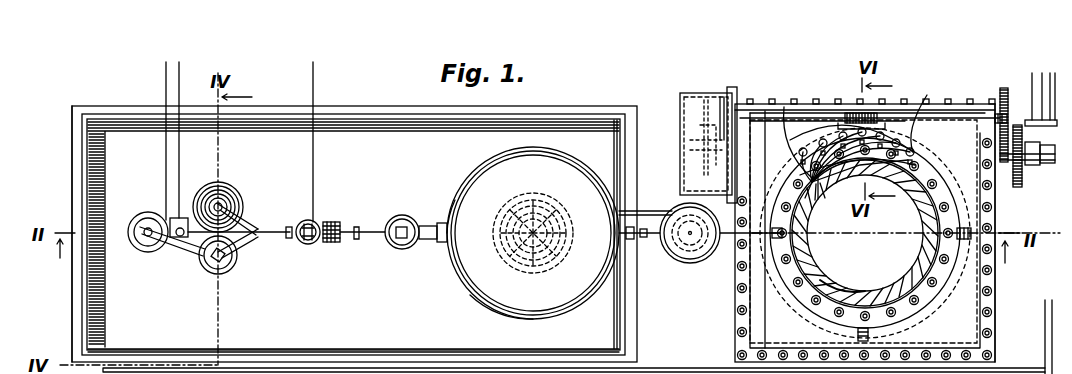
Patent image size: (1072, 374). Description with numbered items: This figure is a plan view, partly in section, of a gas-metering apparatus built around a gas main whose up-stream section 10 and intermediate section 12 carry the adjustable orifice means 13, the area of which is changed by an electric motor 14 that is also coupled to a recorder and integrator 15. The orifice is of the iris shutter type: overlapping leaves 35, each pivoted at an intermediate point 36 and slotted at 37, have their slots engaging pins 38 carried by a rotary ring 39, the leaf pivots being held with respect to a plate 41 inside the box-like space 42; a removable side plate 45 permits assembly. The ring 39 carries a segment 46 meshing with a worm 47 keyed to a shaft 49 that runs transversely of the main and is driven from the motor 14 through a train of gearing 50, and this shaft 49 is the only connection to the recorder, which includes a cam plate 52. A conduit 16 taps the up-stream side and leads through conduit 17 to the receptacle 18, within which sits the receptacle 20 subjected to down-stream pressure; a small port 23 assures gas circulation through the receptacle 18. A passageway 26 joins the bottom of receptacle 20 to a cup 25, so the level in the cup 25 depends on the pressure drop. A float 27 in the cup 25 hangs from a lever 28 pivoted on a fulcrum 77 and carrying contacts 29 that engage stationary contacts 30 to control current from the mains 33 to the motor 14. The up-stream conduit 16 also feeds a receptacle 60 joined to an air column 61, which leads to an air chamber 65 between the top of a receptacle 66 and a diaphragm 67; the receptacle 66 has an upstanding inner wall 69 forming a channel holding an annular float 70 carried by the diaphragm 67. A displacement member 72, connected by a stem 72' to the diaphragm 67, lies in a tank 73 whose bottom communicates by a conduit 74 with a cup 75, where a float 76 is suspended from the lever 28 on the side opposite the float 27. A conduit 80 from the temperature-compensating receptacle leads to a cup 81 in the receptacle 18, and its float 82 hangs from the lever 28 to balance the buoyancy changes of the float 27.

The gas main section 10 is at (800, 296).
The intermediate section 12 is at (965, 281).
The adjustable orifice means 13 is at (920, 216).
The electric motor 14 is at (1034, 165).
The recorder and integrator 15 is at (705, 93).
The conduit 16 is at (795, 242).
The conduit 17 is at (660, 245).
The receptacle 18 is at (548, 116).
The receptacle 20 is at (148, 220).
The small port 23 is at (112, 232).
The cup 25 is at (214, 270).
The passageway 26 is at (190, 250).
The float 27 is at (244, 268).
The lever 28 is at (377, 228).
The contacts 29 is at (212, 268).
The stationary contacts 30 is at (181, 218).
The mains 33 is at (1046, 334).
The overlapping leaves 35 is at (843, 285).
The pivot 36 is at (814, 196).
The slot 37 is at (800, 158).
The pins 38 is at (918, 143).
The ring 39 is at (797, 130).
The plate 41 is at (800, 118).
The box-like space 42 is at (926, 164).
The removable side plate 45 is at (960, 105).
The segment 46 is at (858, 114).
The worm 47 is at (880, 116).
The shaft 49 is at (905, 122).
The train of gearing 50 is at (1017, 128).
The cam plate 52 is at (690, 152).
The receptacle 60 is at (697, 264).
The vertical column 61 is at (706, 258).
The air chamber 65 is at (578, 177).
The receptacle 66 is at (472, 177).
The movable diaphragm member 67 is at (484, 285).
The upstanding inner wall 69 is at (553, 258).
The annular float 70 is at (507, 290).
The displacement member 72 is at (547, 233).
The stem 72' is at (525, 217).
The tank 73 is at (512, 240).
The conduit 74 is at (425, 243).
The cup 75 is at (392, 245).
The float 76 is at (410, 220).
The fulcrum 77 is at (303, 240).
The conduit 80 is at (670, 212).
The cup 81 is at (226, 204).
The float 82 is at (238, 202).